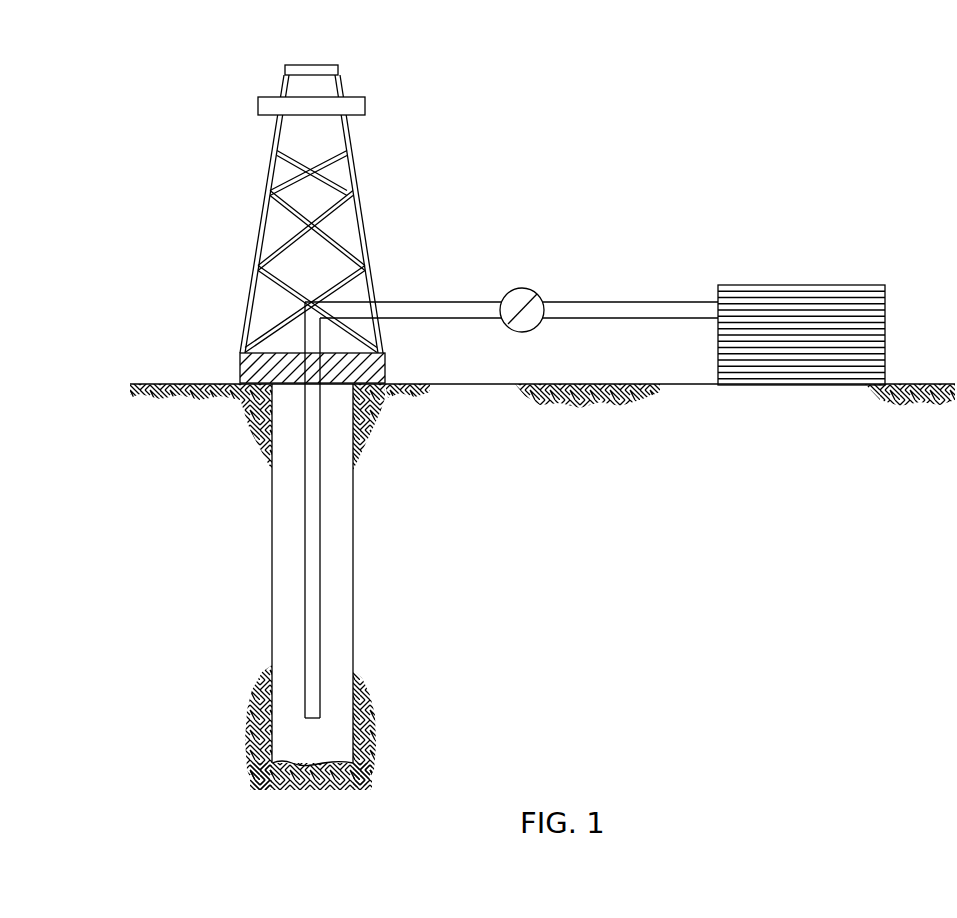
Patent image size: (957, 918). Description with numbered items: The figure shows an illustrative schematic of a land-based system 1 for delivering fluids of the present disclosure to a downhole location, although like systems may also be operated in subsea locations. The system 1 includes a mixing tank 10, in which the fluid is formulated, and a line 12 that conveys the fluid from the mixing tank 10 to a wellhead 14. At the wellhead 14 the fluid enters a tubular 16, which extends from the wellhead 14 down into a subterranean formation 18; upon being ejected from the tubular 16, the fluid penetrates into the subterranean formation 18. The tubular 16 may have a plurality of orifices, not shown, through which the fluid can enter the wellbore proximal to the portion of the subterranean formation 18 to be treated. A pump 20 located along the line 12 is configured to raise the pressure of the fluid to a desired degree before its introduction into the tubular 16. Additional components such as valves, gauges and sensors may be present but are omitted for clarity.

The system 1 is at (124, 74).
The mixing tank 10 is at (866, 288).
The line 12 is at (440, 302).
The wellhead 14 is at (240, 370).
The tubular 16 is at (320, 498).
The subterranean formation 18 is at (196, 581).
The pump 20 is at (536, 292).